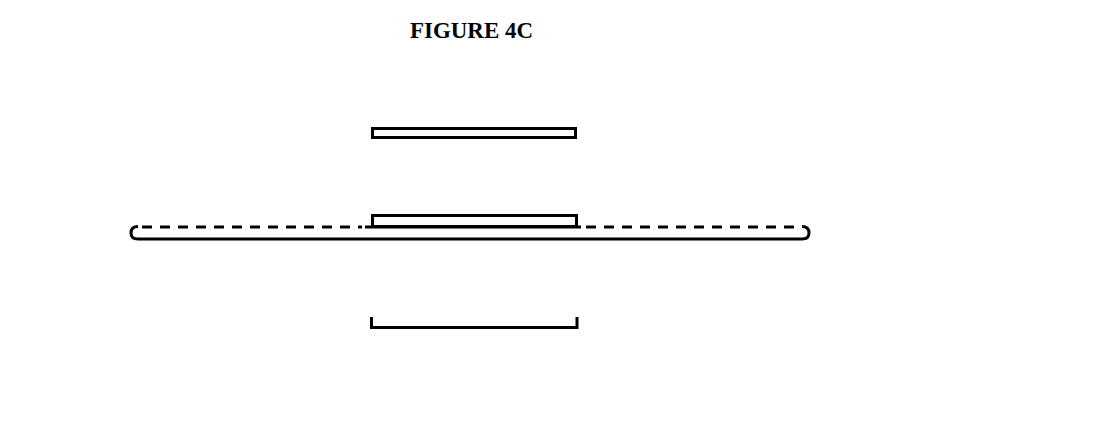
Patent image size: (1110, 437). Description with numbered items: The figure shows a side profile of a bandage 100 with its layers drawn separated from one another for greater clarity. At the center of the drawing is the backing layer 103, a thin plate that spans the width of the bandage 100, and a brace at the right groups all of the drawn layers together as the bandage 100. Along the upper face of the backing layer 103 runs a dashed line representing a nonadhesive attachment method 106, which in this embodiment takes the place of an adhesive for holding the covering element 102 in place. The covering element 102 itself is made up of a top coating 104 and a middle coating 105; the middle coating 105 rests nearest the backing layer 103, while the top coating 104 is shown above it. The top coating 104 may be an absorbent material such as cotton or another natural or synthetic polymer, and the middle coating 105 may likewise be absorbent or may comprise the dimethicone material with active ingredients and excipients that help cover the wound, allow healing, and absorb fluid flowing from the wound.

The bandage 100 is at (868, 115).
The covering element 102 is at (560, 332).
The backing layer 103 is at (465, 241).
The top coating 104 is at (400, 123).
The middle coating 105 is at (560, 211).
The nonadhesive attachment method 106 is at (185, 225).